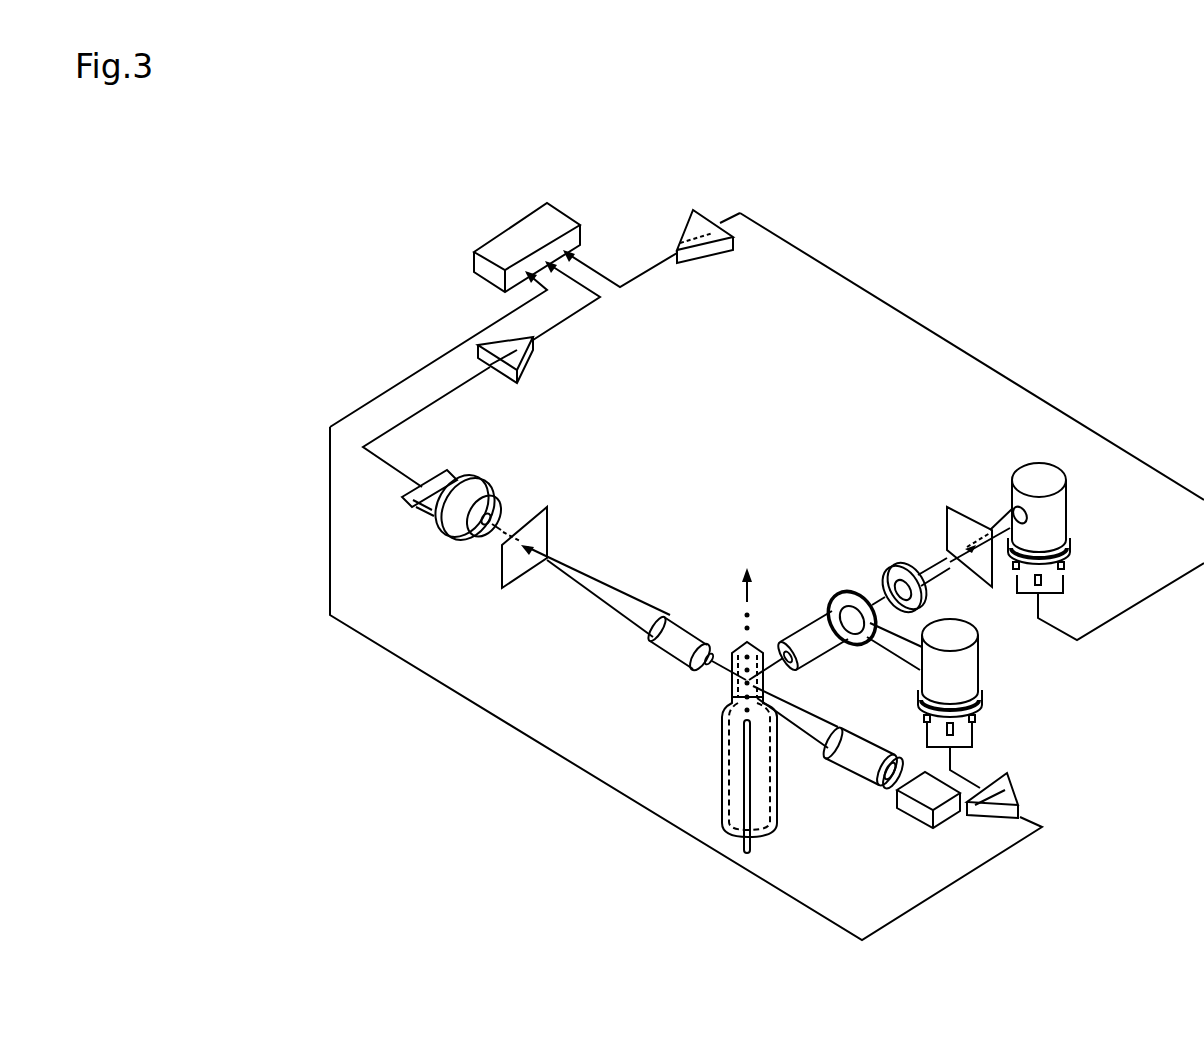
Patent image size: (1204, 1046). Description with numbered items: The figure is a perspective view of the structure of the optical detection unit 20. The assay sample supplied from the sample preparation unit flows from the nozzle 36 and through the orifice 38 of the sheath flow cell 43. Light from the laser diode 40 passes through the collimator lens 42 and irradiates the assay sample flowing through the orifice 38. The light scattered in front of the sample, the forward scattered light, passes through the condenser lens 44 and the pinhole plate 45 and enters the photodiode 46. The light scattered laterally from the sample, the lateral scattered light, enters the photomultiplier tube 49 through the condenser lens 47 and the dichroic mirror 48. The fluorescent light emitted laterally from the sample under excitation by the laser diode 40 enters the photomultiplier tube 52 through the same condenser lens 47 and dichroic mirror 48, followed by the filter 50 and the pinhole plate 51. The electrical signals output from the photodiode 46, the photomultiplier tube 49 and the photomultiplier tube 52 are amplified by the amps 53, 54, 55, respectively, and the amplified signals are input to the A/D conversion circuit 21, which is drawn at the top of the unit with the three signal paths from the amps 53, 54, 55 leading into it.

The optical detection unit 20 is at (1022, 330).
The A/D conversion circuit 21 is at (518, 242).
The nozzle 36 is at (752, 848).
The orifice 38 is at (732, 683).
The laser diode 40 is at (920, 800).
The collimator lens 42 is at (872, 740).
The sheath flow cell 43 is at (778, 788).
The condenser lens 44 is at (688, 620).
The pinhole plate 45 is at (545, 522).
The photodiode 46 is at (485, 492).
The condenser lens 47 is at (805, 630).
The dichroic mirror 48 is at (850, 594).
The photomultiplier tube 49 is at (968, 663).
The filter 50 is at (902, 576).
The pinhole plate 51 is at (956, 518).
The photomultiplier tube 52 is at (1063, 506).
The amp 53 is at (520, 352).
The amp 54 is at (1008, 788).
The amp 55 is at (713, 233).